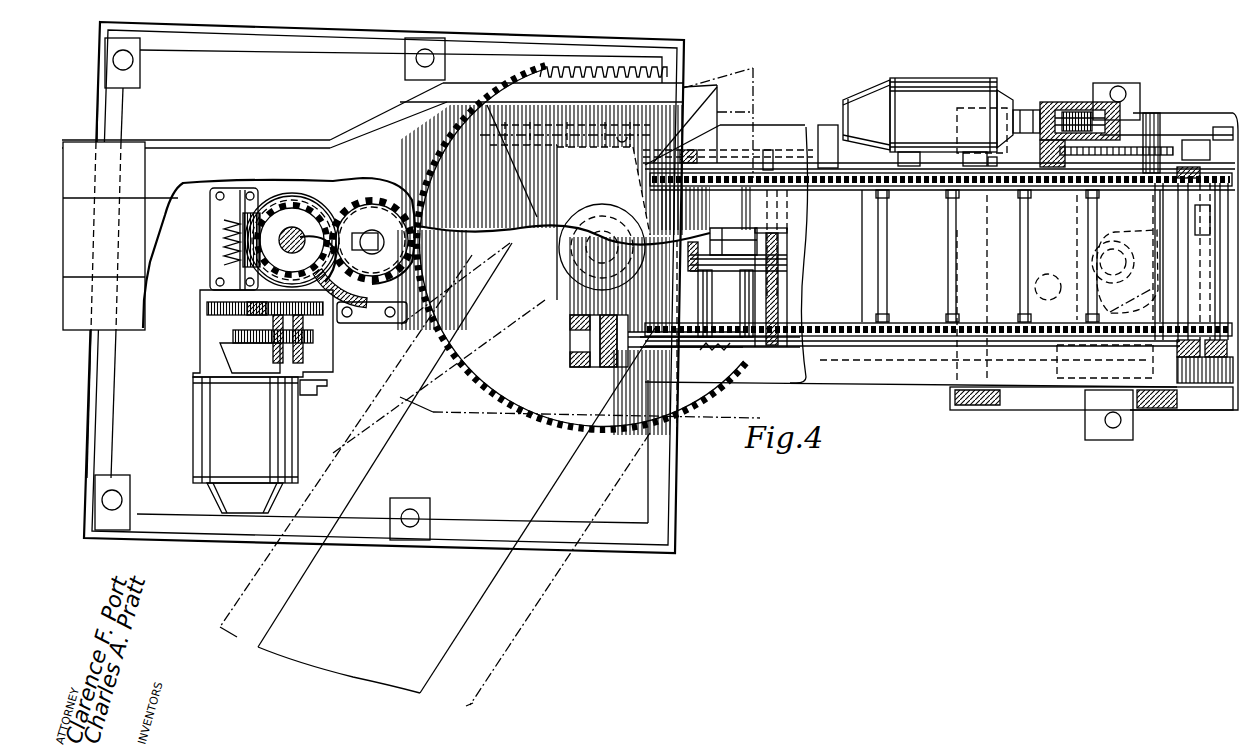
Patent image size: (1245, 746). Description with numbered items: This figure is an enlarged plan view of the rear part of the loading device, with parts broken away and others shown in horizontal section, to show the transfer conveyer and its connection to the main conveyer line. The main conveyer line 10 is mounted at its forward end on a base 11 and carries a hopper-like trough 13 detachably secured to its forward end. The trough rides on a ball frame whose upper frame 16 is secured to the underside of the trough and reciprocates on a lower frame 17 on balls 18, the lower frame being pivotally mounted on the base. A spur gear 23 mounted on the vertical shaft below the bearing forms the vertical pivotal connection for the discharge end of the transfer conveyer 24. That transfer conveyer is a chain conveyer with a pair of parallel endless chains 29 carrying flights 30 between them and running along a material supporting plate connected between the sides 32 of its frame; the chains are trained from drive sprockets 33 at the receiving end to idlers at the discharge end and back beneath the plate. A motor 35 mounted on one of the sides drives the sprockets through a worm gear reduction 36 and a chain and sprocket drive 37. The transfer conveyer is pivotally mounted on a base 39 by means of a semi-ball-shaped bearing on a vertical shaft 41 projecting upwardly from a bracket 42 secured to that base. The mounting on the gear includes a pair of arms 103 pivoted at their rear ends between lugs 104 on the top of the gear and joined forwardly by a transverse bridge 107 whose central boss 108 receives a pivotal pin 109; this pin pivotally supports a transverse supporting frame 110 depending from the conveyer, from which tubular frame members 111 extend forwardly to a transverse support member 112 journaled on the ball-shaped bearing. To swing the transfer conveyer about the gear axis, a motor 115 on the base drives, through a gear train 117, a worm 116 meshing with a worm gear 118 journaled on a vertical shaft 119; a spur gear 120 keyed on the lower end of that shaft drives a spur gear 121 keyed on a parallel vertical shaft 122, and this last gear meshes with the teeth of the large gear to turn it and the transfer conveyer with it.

The main conveyer line 10 is at (244, 136).
The base 11 is at (95, 447).
The hopper-like trough 13 is at (700, 85).
The upper frame 16 is at (415, 103).
The lower frame 17 is at (492, 76).
The balls 18 is at (543, 130).
The spur gear 23 is at (560, 418).
The transfer conveyer 24 is at (925, 387).
The endless chains 29 is at (862, 312).
The flights 30 is at (880, 231).
The sides 32 is at (796, 127).
The drive sprockets 33 is at (1195, 222).
The motor 35 is at (948, 80).
The worm gear reduction 36 is at (1076, 105).
The chain and sprocket drive 37 is at (1160, 130).
The base 39 is at (988, 412).
The vertical shaft 41 is at (1110, 284).
The bracket 42 is at (1102, 338).
The arms 103 is at (756, 355).
The lugs 104 is at (570, 325).
The transverse bridge 107 is at (722, 358).
The central boss 108 is at (730, 272).
The pivotal pin 109 is at (742, 230).
The transverse supporting frame 110 is at (790, 248).
The tubular frame members 111 is at (810, 385).
The transverse support member 112 is at (1072, 278).
The motor 115 is at (298, 410).
The worm 116 is at (216, 236).
The gear train 117 is at (230, 342).
The worm gear 118 is at (272, 198).
The vertical shaft 119 is at (222, 251).
The spur gear 120 is at (372, 240).
The spur gear 121 is at (368, 320).
The vertical shaft 122 is at (500, 247).